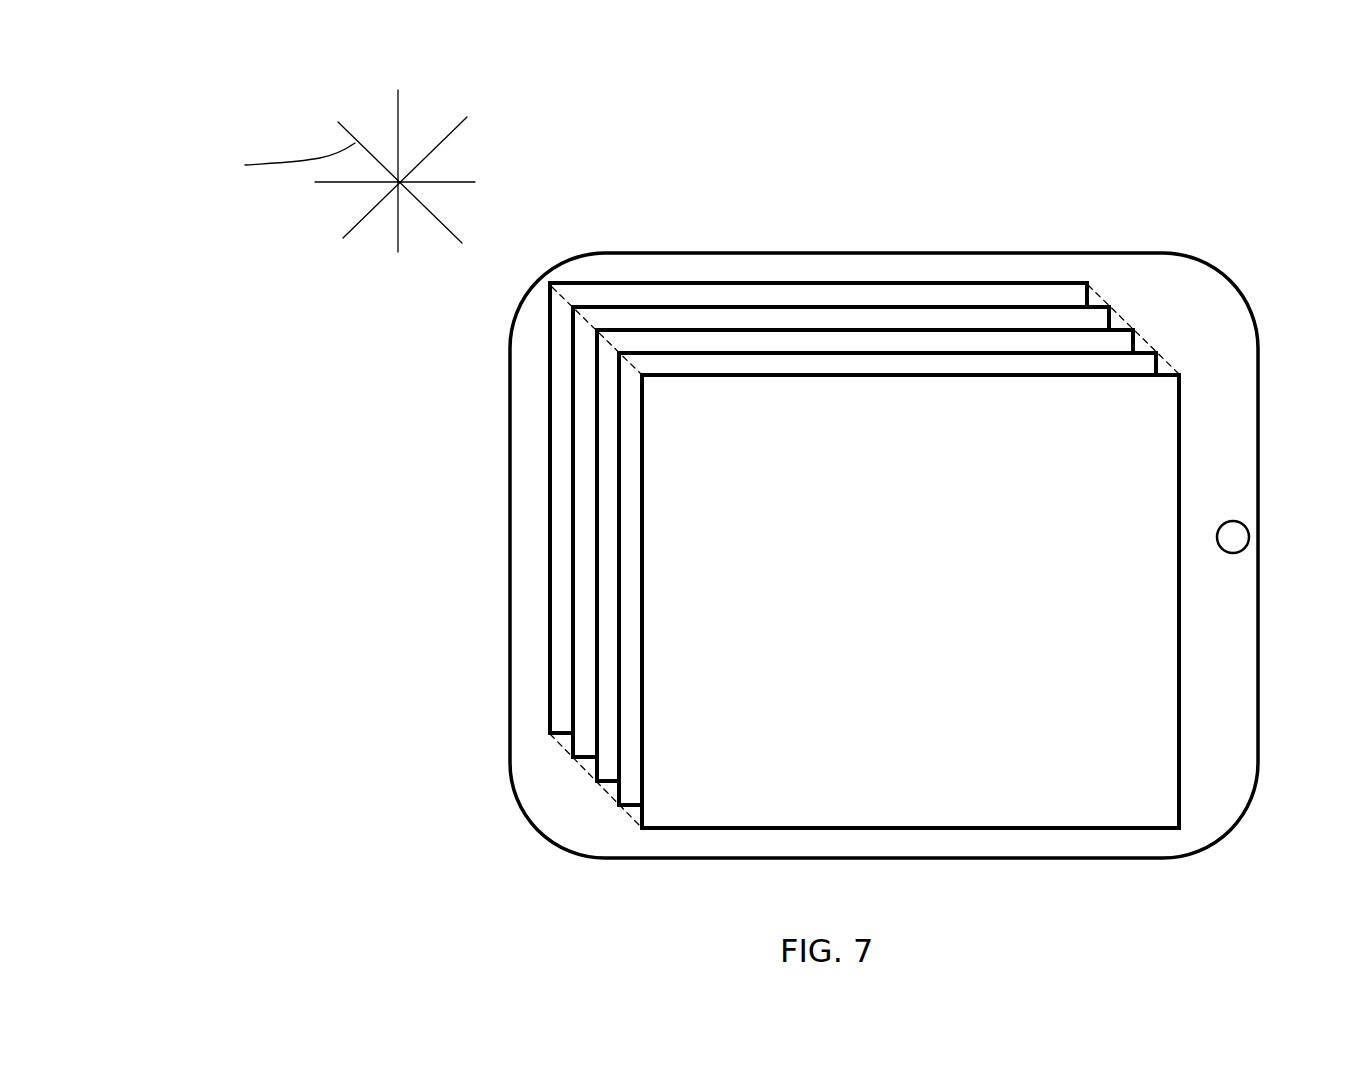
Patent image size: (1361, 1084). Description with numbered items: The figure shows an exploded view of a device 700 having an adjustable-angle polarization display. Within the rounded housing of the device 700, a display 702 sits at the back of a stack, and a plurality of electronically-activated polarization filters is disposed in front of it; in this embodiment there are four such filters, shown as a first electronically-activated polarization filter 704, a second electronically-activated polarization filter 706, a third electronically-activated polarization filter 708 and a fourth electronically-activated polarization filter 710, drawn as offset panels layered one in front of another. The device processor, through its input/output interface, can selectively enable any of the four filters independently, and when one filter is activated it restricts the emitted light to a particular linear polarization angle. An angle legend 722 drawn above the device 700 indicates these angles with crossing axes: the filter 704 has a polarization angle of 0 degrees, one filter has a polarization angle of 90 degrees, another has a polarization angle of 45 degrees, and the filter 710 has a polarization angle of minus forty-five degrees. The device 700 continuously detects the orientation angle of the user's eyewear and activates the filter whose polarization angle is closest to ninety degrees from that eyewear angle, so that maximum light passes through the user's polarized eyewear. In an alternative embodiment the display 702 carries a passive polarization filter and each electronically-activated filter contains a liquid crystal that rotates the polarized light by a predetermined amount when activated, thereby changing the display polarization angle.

The device 700 is at (719, 252).
The display 702 is at (550, 398).
The electronically-activated polarization filter 704 is at (572, 470).
The electronically-activated polarization filter 706 is at (596, 550).
The electronically-activated polarization filter 708 is at (618, 663).
The electronically-activated polarization filter 710 is at (783, 830).
The angle legend 722 is at (451, 146).
The ninety-degree polarization angle 90 is at (399, 125).
The forty-five-degree polarization angle 45 is at (436, 150).
The zero-degree polarization angle 0 is at (342, 183).